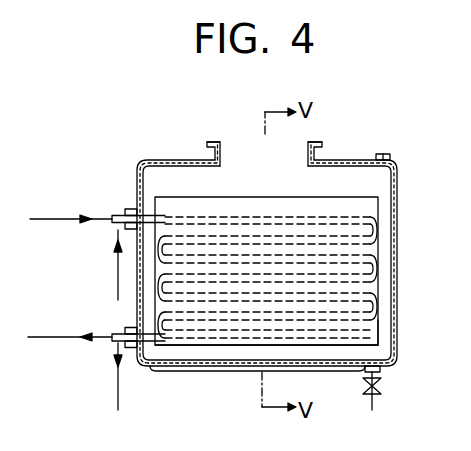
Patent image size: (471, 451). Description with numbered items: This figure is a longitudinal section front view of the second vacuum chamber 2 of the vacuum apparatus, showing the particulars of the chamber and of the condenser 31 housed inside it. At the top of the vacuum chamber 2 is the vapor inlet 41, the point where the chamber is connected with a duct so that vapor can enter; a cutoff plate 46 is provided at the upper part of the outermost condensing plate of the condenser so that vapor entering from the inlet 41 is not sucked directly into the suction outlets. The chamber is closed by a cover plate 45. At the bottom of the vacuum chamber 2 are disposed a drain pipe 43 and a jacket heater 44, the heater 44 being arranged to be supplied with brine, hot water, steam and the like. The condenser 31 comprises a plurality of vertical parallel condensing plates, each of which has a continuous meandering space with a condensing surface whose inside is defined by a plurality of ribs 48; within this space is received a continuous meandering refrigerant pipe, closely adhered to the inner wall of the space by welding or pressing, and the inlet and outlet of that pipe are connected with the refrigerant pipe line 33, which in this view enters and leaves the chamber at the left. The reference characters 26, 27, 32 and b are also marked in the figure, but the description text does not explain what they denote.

The vacuum chamber 2 is at (366, 163).
The inner container bottom 26 is at (203, 346).
The heat exchange coil 27 is at (365, 316).
The condenser 31 is at (318, 203).
The flow direction 32 is at (118, 270).
The refrigerant pipe line 33 is at (103, 213).
The vapor inlet 41 is at (229, 146).
The drain pipe 43 is at (385, 383).
The jacket heater 44 is at (334, 372).
The cover plate 45 is at (397, 280).
The cutoff plate 46 is at (268, 212).
The ribs 48 is at (380, 267).
The gap b is at (376, 336).